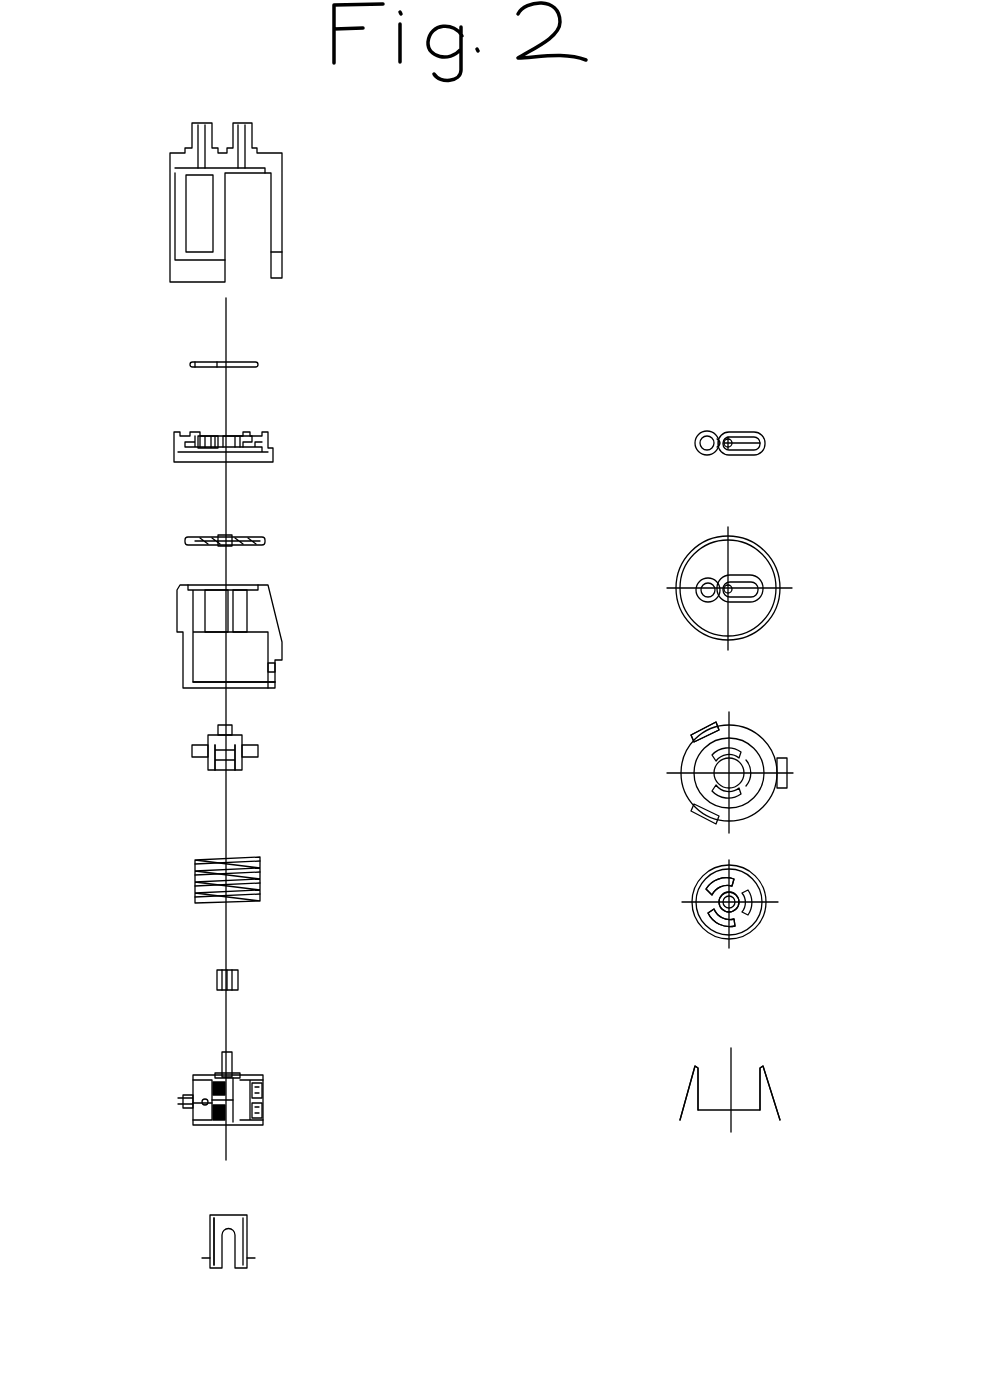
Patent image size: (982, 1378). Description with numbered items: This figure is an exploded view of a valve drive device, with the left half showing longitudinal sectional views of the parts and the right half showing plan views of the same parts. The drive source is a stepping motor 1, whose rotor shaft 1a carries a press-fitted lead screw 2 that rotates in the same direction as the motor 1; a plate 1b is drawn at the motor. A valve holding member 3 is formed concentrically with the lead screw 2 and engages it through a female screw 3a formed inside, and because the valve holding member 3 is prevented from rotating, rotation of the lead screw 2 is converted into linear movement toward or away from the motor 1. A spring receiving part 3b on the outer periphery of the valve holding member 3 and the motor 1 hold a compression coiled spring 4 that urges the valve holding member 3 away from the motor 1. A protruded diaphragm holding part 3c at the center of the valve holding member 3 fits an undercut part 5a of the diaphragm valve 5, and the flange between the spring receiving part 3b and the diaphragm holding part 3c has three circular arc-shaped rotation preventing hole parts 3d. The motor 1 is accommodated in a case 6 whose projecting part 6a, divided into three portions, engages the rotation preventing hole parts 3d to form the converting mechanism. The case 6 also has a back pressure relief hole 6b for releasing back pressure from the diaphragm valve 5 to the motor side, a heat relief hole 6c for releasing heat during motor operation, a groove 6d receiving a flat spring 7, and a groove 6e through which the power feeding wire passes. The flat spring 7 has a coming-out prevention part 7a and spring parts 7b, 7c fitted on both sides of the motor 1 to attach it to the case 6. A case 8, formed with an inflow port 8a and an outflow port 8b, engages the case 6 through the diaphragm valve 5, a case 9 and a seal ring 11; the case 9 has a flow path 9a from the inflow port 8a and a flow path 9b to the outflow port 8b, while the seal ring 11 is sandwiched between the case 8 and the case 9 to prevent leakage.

The stepping motor 1 is at (144, 1110).
The rotor shaft 1a is at (233, 1070).
The plate 1b is at (243, 1072).
The lead screw 2 is at (200, 989).
The valve holding member 3 is at (134, 759).
The female screw 3a is at (237, 763).
The spring receiving part 3b is at (198, 745).
The diaphragm holding part 3c is at (230, 727).
The rotation preventing hole parts 3d is at (250, 742).
The spring 4 is at (154, 892).
The diaphragm valve 5 is at (146, 547).
The undercut part 5a is at (220, 545).
The case 6 is at (135, 641).
The projecting part 6a is at (247, 625).
The back pressure relief hole 6b is at (258, 597).
The heat relief hole 6c is at (268, 668).
The groove 6d is at (247, 688).
The groove 6e is at (685, 785).
The flat spring 7 is at (142, 1250).
The coming-out prevention part 7a is at (210, 1243).
The spring part 7b is at (690, 1103).
The spring part 7c is at (780, 1102).
The case 8 is at (122, 209).
The inflow port 8a is at (240, 121).
The outflow port 8b is at (197, 121).
The case 9 is at (141, 454).
The flow path 9a is at (239, 431).
The flow path 9b is at (203, 431).
The seal ring 11 is at (165, 368).